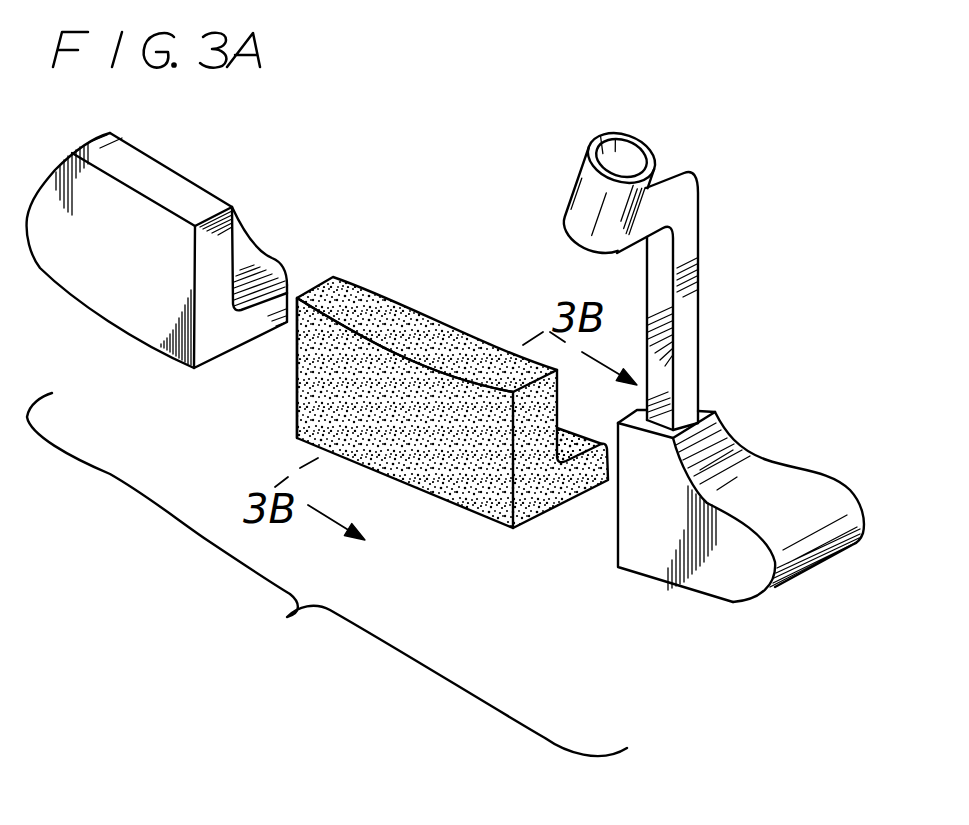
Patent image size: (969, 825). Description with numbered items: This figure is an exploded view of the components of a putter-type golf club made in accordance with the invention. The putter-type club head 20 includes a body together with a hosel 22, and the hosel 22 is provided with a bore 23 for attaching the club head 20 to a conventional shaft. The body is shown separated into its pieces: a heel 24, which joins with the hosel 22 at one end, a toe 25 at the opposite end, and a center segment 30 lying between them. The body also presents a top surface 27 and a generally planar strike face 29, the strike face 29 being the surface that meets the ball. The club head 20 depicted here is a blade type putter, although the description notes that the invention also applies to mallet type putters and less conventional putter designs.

The putter-type club head 20 is at (407, 153).
The hosel 22 is at (700, 313).
The bore 23 is at (632, 152).
The heel 24 is at (788, 450).
The toe 25 is at (188, 166).
The top surface 27 is at (441, 336).
The strike face 29 is at (486, 498).
The center segment 30 is at (296, 420).